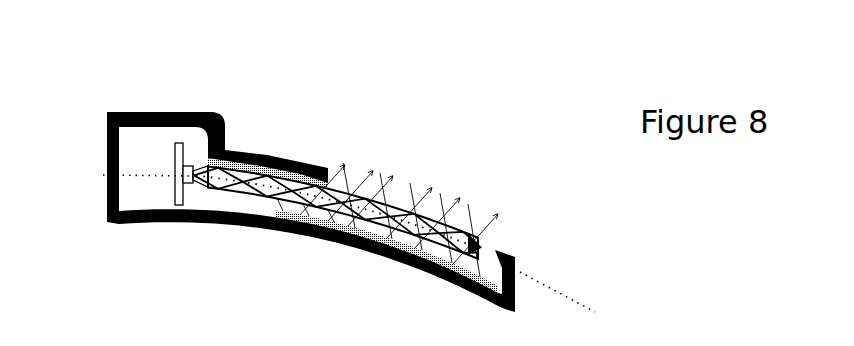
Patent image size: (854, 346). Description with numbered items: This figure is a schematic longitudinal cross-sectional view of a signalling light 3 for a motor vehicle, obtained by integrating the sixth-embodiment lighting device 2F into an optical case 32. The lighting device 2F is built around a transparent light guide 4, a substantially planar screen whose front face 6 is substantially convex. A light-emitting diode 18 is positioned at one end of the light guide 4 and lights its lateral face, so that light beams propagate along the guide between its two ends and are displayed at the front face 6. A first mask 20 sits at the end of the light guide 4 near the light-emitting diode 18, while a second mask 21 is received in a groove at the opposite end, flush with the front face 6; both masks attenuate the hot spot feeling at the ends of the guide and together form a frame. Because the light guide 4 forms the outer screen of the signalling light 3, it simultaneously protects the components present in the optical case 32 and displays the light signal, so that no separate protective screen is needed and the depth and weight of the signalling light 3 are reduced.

The signalling light 3 is at (127, 97).
The first mask 20 is at (215, 113).
The optical case 32 is at (107, 140).
The light-emitting diode 18 is at (178, 177).
The light guide 4 is at (463, 228).
The front face 6 is at (477, 228).
The lighting device 2F is at (370, 179).
The second mask 21 is at (495, 250).